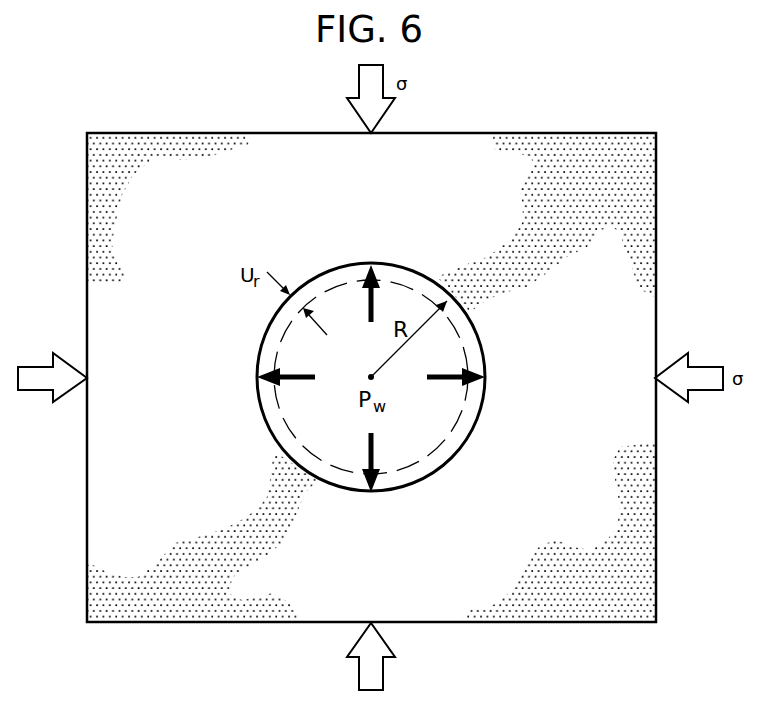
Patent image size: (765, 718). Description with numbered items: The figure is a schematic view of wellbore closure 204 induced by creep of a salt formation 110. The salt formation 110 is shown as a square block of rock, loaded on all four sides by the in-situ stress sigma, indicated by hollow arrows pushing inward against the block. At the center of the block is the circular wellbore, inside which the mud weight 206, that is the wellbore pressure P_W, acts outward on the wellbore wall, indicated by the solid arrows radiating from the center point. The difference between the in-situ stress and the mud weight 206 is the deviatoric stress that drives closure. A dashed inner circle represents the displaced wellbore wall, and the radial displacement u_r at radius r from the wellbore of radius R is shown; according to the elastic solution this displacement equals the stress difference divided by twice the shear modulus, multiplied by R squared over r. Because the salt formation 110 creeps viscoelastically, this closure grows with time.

The wellbore closure 204 is at (566, 94).
The mud weight 206 is at (441, 463).
The salt formation 110 is at (393, 568).